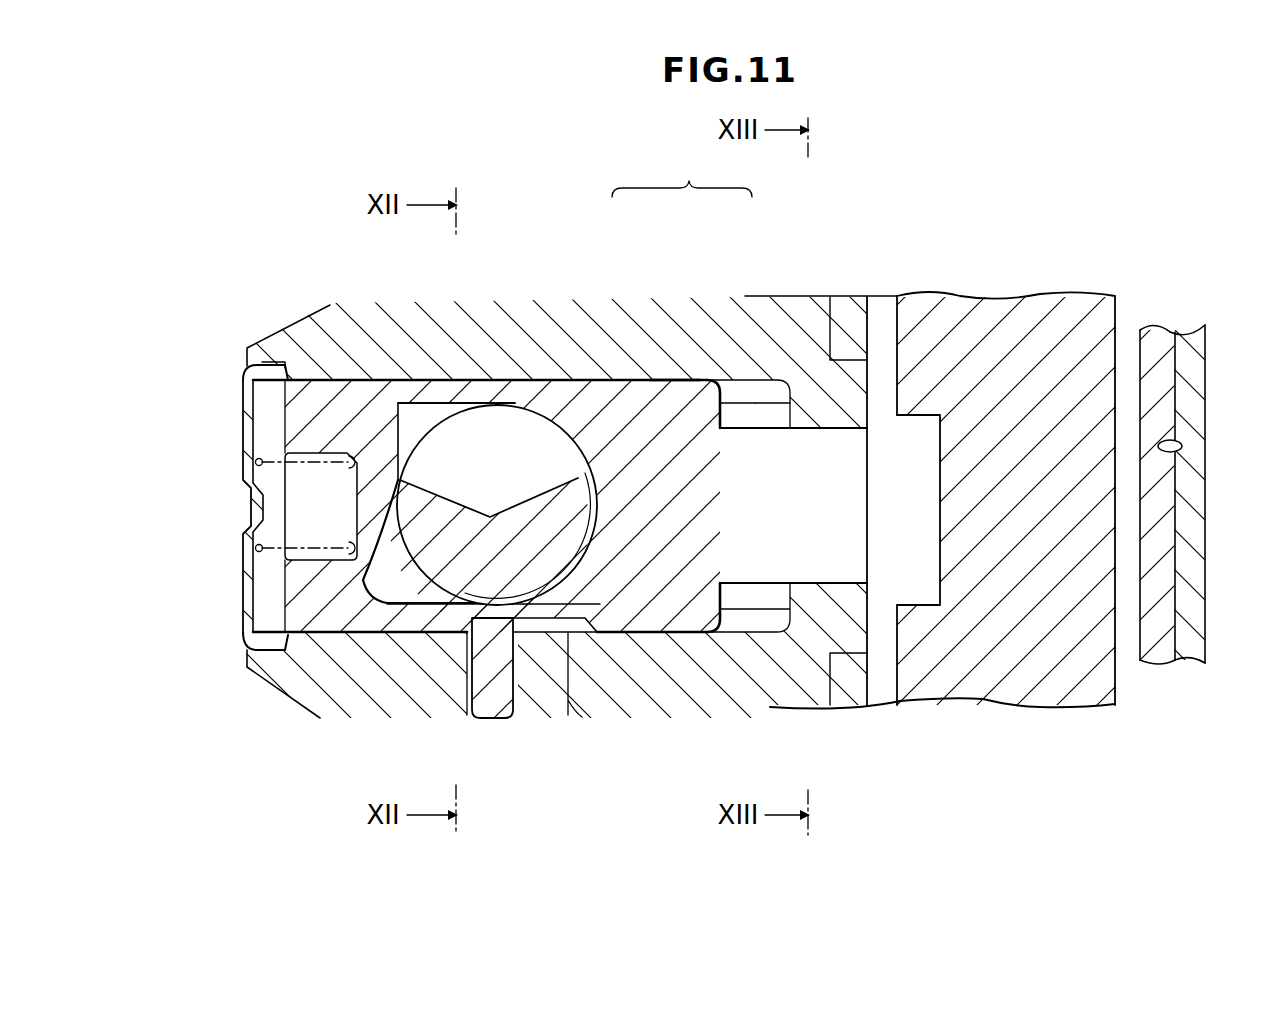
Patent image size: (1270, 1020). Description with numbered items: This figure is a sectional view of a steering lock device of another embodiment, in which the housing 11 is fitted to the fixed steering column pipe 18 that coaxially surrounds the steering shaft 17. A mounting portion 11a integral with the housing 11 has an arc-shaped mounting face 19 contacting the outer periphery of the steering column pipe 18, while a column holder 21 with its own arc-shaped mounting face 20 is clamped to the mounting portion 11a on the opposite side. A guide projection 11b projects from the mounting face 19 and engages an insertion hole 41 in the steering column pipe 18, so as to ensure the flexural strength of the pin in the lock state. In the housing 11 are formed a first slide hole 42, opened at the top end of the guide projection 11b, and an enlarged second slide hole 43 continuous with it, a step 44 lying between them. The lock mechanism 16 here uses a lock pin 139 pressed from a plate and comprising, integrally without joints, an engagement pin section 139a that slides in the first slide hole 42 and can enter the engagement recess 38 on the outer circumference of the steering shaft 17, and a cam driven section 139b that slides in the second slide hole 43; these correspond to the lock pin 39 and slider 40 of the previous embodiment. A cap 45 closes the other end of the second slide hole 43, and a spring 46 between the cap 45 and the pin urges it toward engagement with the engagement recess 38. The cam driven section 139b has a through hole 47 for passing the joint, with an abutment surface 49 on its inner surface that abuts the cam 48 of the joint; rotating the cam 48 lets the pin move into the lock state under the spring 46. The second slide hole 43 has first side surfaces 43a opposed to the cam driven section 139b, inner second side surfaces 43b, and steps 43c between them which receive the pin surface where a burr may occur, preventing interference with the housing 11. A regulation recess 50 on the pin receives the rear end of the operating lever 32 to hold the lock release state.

The housing 11 is at (332, 330).
The mounting portion 11a is at (803, 322).
The guide projection 11b is at (862, 640).
The lock mechanism 16 is at (453, 366).
The steering shaft 17 is at (1028, 509).
The steering column pipe 18 is at (1158, 566).
The mounting face 19 is at (850, 706).
The mounting face 20 is at (1183, 448).
The column holder 21 is at (1193, 410).
The operating lever 32 is at (487, 705).
The engagement recess 38 is at (928, 443).
The lock pin 39 is at (873, 510).
The slider 40 is at (403, 622).
The insertion hole 41 is at (868, 375).
The first slide hole 42 is at (812, 655).
The second slide hole 43 is at (630, 378).
The first side surface 43a is at (393, 318).
The second side surface 43b is at (737, 405).
The step 43c is at (772, 394).
The step 44 is at (820, 575).
The cap 45 is at (246, 588).
The spring 46 is at (255, 452).
The through hole 47 is at (530, 398).
The cam 48 is at (450, 507).
The abutment surface 49 is at (408, 478).
The regulation recess 50 is at (585, 642).
The lock pin 139 is at (682, 177).
The engagement pin section 139a is at (835, 440).
The cam driven section 139b is at (670, 392).